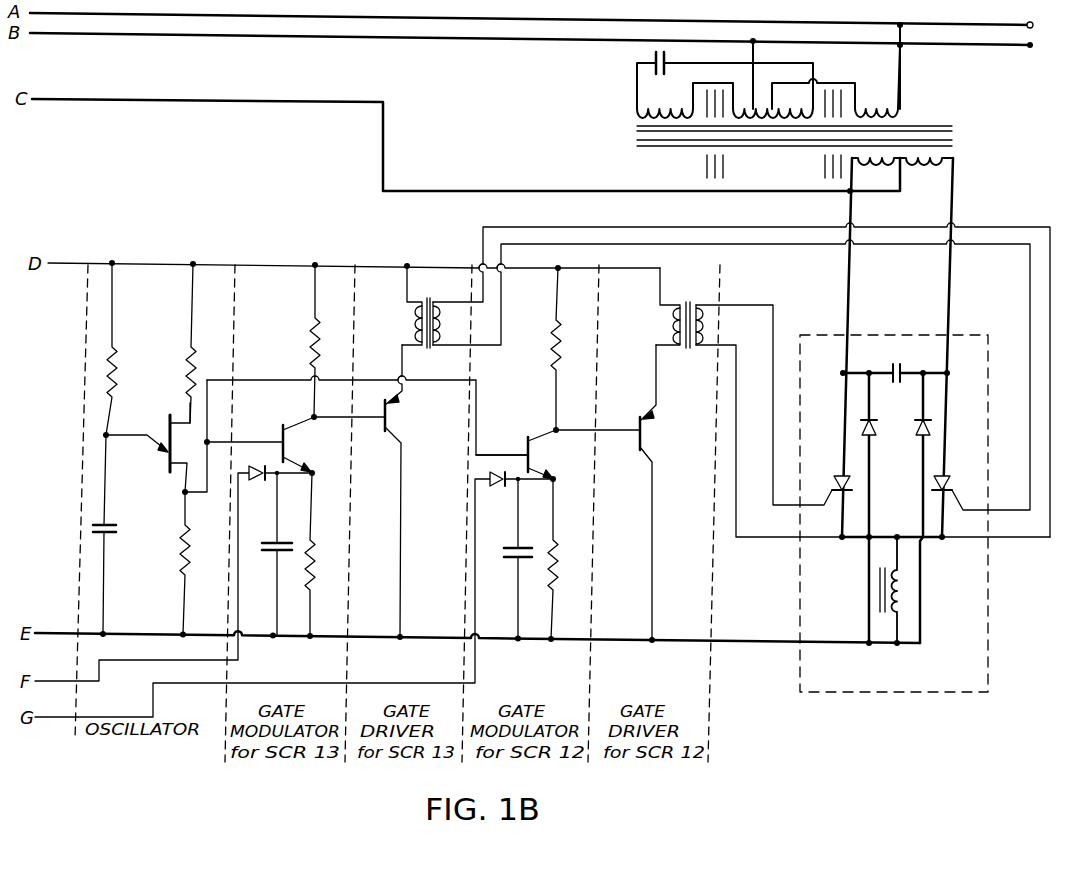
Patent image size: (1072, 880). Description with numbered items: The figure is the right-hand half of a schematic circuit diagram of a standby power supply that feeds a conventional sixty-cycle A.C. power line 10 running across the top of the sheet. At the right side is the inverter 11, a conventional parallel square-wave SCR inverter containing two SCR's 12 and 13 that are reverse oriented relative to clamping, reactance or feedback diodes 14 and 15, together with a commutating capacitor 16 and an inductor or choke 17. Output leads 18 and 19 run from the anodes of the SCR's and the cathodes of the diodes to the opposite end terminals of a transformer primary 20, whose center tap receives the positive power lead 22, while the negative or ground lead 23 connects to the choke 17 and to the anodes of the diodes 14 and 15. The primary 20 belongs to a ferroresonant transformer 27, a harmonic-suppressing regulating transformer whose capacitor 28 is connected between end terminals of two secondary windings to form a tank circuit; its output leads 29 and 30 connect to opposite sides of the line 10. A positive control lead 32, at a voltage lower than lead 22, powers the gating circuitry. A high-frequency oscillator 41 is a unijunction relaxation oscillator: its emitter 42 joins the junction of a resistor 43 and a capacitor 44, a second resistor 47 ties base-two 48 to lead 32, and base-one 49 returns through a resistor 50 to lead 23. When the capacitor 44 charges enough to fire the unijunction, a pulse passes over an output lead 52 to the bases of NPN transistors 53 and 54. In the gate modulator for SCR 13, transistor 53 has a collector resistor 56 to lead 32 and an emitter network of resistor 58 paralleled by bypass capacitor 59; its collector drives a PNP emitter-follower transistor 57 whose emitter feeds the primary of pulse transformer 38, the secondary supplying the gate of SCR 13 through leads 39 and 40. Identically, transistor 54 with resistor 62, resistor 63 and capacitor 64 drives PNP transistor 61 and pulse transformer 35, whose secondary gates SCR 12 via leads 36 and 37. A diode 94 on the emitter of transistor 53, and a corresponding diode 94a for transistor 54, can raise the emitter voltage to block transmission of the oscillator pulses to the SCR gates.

The A.C. power line 10 is at (440, 39).
The inverter 11 is at (988, 640).
The SCR 12 is at (835, 488).
The SCR 13 is at (950, 483).
The clamping diode 14 is at (876, 438).
The clamping diode 15 is at (916, 428).
The commutating capacitor 16 is at (905, 371).
The choke 17 is at (905, 593).
The output lead 18 is at (851, 212).
The output lead 19 is at (953, 203).
The transformer primary 20 is at (926, 170).
The positive power lead 22 is at (776, 192).
The negative lead 23 is at (758, 645).
The ferroresonant transformer 27 is at (630, 98).
The capacitor 28 is at (672, 67).
The output lead 29 is at (758, 71).
The output lead 30 is at (903, 73).
The positive control lead 32 is at (271, 264).
The pulse transformer 35 is at (688, 306).
The lead 36 is at (776, 324).
The lead 37 is at (758, 538).
The pulse transformer 38 is at (421, 300).
The lead 39 is at (1012, 229).
The lead 40 is at (1010, 247).
The high-frequency oscillator 41 is at (163, 288).
The emitter 42 is at (160, 447).
The resistor 43 is at (116, 355).
The capacitor 44 is at (110, 535).
The second resistor 47 is at (180, 360).
The base-two 48 is at (176, 418).
The base-one 49 is at (170, 472).
The resistor 50 is at (182, 565).
The output lead 52 is at (244, 380).
The NPN transistor 53 is at (292, 412).
The NPN transistor 54 is at (535, 428).
The resistor 56 is at (319, 340).
The PNP transistor 57 is at (391, 430).
The resistor 58 is at (314, 558).
The capacitor 59 is at (271, 556).
The PNP transistor 61 is at (648, 441).
The resistor 62 is at (560, 341).
The resistor 63 is at (557, 560).
The capacitor 64 is at (511, 560).
The diode 94 is at (258, 479).
The diode 94a is at (497, 486).